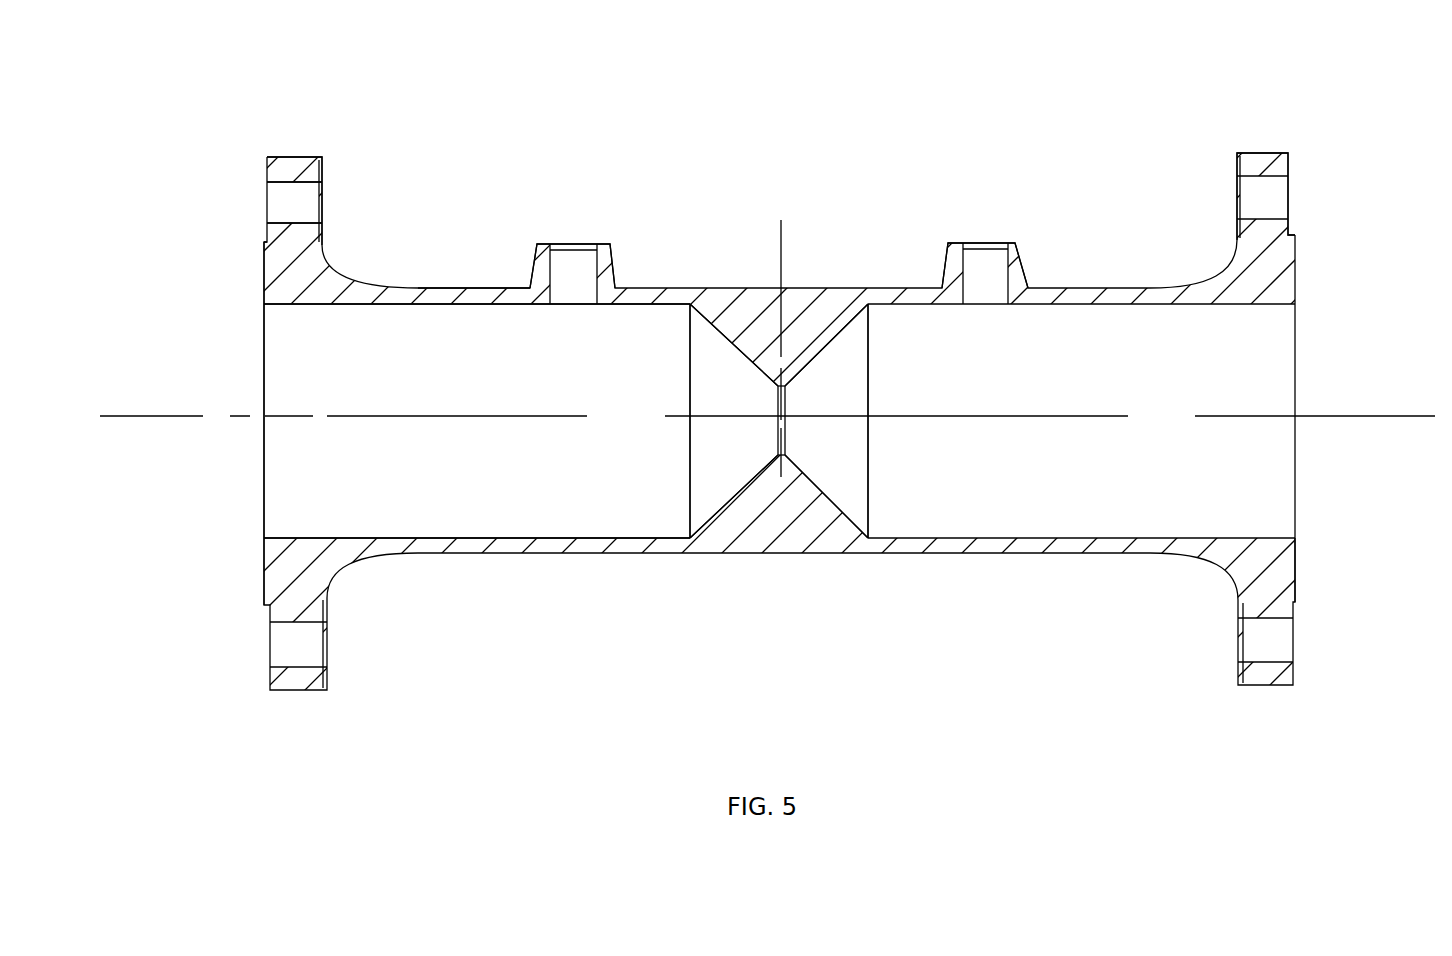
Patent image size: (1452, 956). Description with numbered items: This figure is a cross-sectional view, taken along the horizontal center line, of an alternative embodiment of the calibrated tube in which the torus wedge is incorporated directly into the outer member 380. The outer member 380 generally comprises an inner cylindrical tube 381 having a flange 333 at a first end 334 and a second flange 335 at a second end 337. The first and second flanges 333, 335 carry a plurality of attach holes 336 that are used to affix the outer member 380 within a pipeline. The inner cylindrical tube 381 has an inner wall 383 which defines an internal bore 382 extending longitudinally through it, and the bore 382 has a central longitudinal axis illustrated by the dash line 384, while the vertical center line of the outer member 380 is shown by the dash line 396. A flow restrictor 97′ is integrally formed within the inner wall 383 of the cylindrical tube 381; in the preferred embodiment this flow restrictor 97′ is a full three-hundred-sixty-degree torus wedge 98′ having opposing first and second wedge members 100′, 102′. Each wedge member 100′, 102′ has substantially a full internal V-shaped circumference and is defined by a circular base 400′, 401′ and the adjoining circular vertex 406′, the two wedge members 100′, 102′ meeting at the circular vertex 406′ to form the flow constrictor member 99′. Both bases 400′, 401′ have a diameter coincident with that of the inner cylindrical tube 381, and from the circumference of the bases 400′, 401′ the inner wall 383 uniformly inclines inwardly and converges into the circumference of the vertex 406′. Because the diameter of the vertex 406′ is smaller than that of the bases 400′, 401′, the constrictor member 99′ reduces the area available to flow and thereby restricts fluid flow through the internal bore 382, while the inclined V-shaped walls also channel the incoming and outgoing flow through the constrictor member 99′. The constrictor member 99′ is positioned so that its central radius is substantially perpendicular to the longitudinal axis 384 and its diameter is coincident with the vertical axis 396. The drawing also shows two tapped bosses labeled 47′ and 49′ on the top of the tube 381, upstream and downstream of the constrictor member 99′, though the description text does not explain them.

The flange 333 is at (283, 164).
The first end 334 is at (211, 181).
The second flange 335 is at (1320, 156).
The attach holes 336 is at (772, 419).
The second end 337 is at (1369, 418).
The outer member 380 is at (726, 373).
The inner cylindrical tube 381 is at (186, 423).
The internal bore 382 is at (400, 421).
The inner wall 383 is at (444, 247).
The central longitudinal axis 384 is at (765, 453).
The vertical center line 396 is at (871, 335).
The upstream pressure tap 47′ is at (552, 209).
The downstream pressure tap 49′ is at (1040, 218).
The torus wedge 98′ is at (777, 298).
The flow restrictor 97′ is at (652, 425).
The flow constrictor member 99′ is at (928, 528).
The first wedge member 100′ is at (646, 421).
The second wedge member 102′ is at (915, 421).
The circular base 400′ is at (779, 421).
The circular base 401′ is at (778, 421).
The circular vertex 406′ is at (912, 427).